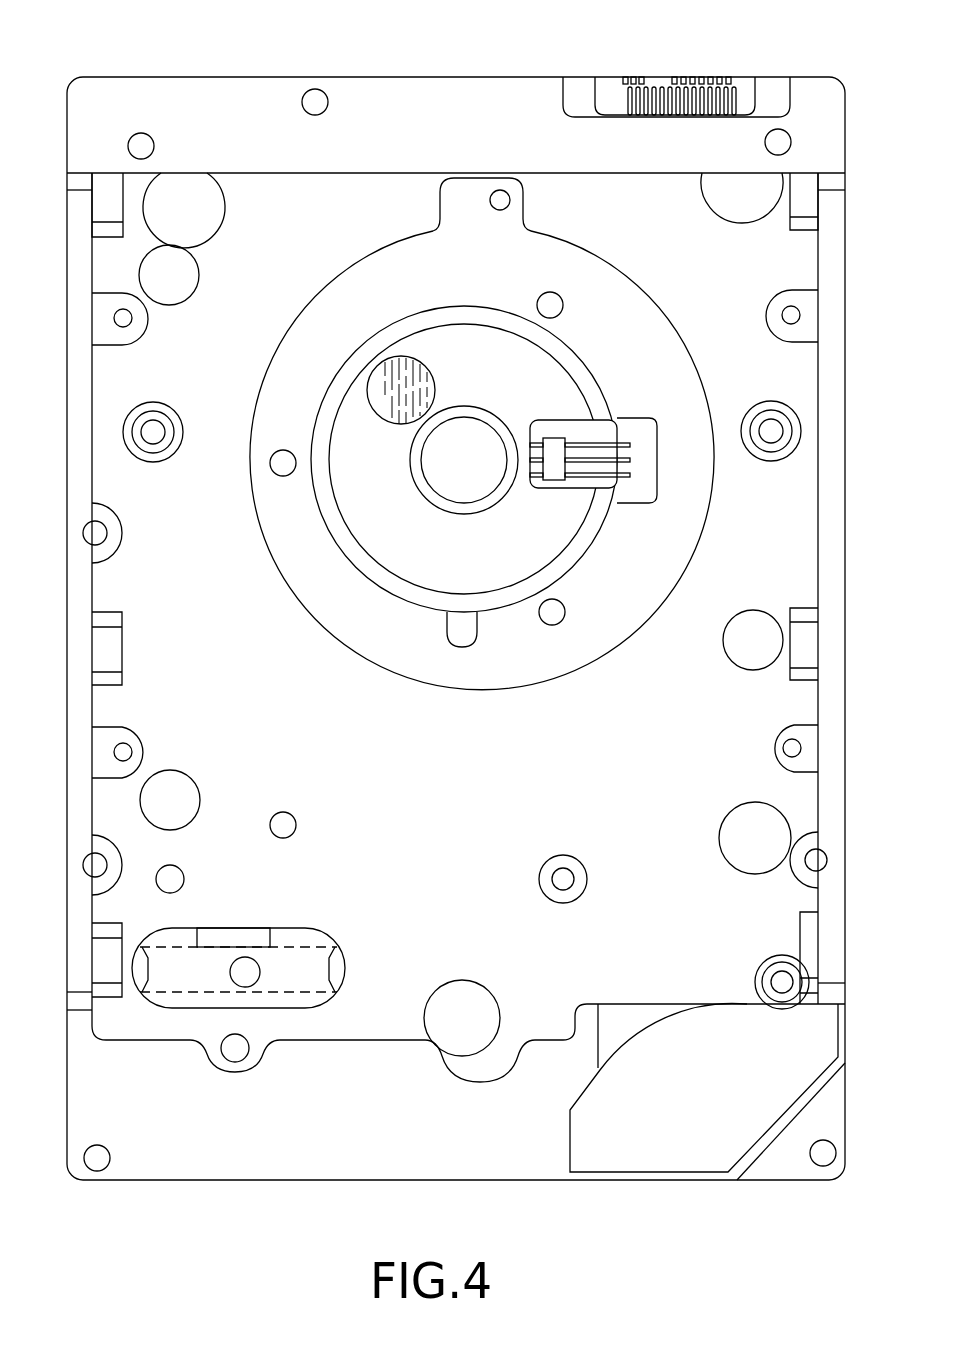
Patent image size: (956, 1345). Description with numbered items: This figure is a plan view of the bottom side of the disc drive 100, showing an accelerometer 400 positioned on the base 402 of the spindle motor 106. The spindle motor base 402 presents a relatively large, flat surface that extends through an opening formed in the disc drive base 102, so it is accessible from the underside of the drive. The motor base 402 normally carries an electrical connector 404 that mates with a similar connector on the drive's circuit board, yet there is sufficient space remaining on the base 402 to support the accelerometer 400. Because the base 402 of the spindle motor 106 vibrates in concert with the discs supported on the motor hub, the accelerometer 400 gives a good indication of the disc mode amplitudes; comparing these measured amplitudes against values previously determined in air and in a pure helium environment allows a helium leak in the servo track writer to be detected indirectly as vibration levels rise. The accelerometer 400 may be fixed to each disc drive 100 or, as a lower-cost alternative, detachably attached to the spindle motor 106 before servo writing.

The disc drive 100 is at (228, 46).
The disc drive base 102 is at (116, 481).
The spindle motor 106 is at (580, 548).
The accelerometer 400 is at (382, 386).
The spindle motor base 402 is at (388, 523).
The electrical connector 404 is at (553, 438).